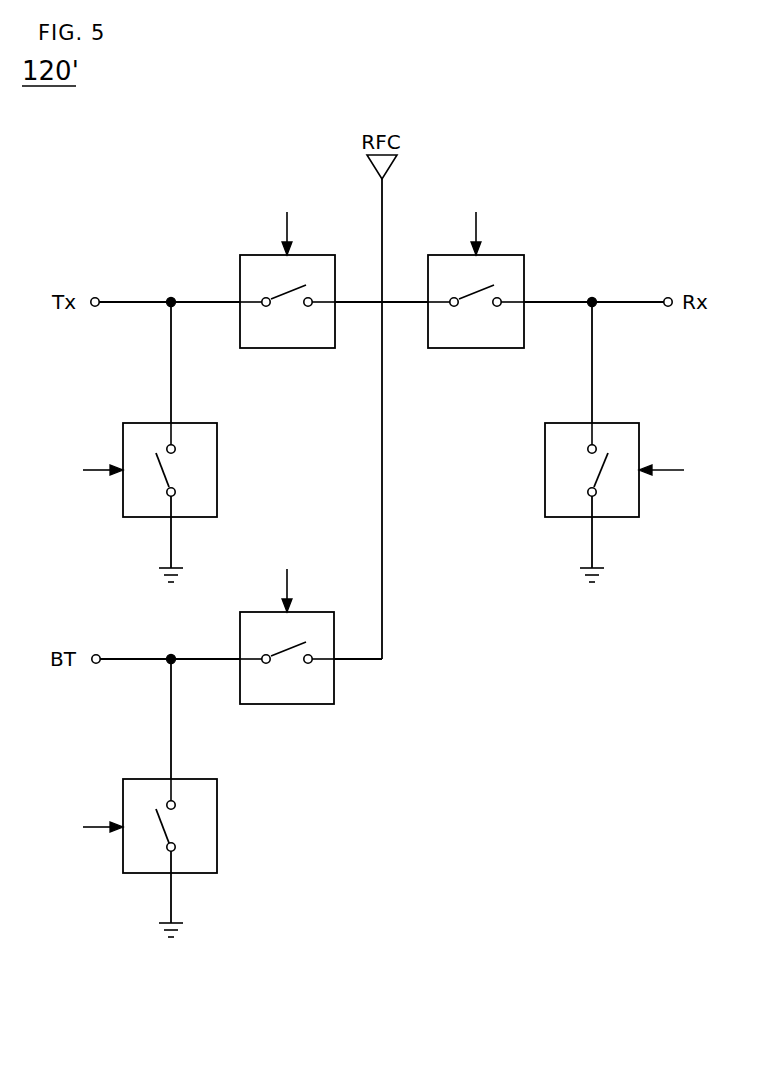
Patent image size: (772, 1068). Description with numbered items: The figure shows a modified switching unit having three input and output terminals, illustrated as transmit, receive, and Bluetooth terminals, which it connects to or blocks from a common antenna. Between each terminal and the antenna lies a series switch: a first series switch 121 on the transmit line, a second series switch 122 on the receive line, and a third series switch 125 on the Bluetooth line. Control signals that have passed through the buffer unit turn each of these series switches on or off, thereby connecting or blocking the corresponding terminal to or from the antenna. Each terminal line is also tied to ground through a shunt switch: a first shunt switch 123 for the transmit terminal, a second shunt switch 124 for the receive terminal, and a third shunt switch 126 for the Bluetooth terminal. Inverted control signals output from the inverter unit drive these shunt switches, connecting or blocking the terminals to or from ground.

The first series switch 121 is at (240, 282).
The second series switch 122 is at (524, 282).
The first shunt switch 123 is at (217, 470).
The second shunt switch 124 is at (545, 470).
The third series switch 125 is at (334, 681).
The third shunt switch 126 is at (217, 825).